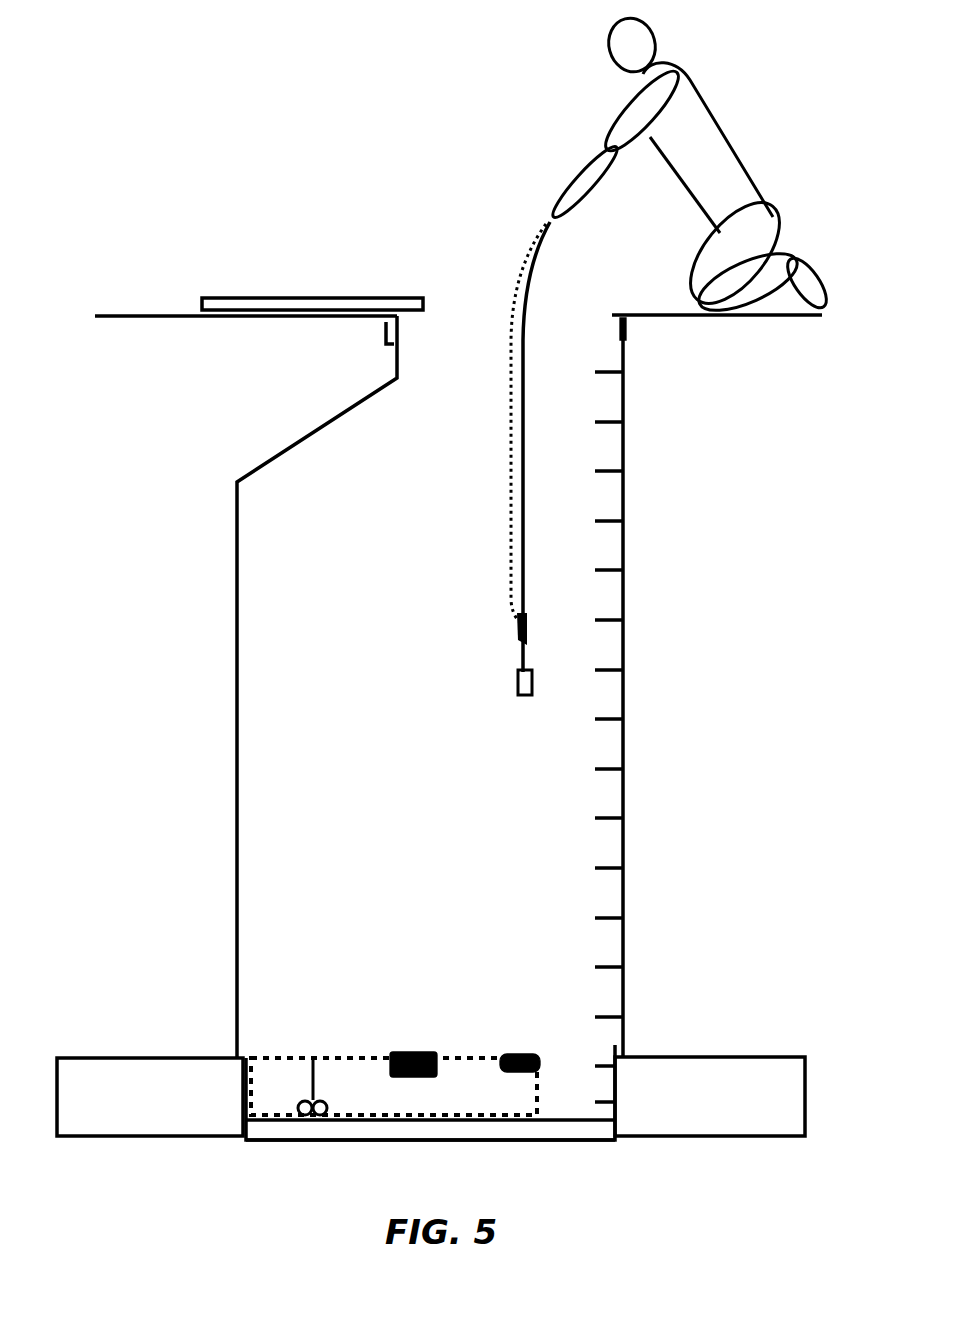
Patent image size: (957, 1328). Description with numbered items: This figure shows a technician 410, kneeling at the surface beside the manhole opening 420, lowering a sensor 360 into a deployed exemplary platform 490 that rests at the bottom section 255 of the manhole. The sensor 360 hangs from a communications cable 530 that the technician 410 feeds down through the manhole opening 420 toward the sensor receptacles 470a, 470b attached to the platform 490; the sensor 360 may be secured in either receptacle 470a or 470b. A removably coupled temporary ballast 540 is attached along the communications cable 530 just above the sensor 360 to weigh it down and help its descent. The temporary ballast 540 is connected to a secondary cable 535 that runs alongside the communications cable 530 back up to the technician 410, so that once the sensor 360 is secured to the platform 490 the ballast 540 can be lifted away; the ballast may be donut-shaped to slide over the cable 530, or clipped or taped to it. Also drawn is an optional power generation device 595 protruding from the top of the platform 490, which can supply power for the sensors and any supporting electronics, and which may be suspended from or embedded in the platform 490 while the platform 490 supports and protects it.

The technician 410 is at (708, 194).
The manhole opening 420 is at (465, 314).
The communications cable 530 is at (524, 352).
The secondary cable 535 is at (510, 432).
The temporary ballast 540 is at (515, 625).
The sensor 360 is at (520, 693).
The exemplary platform 490 is at (347, 1055).
The sensor receptacle 470a is at (420, 1052).
The sensor receptacle 470b is at (513, 1054).
The power generation device 595 is at (305, 1118).
The bottom section of manhole 255 is at (370, 1145).